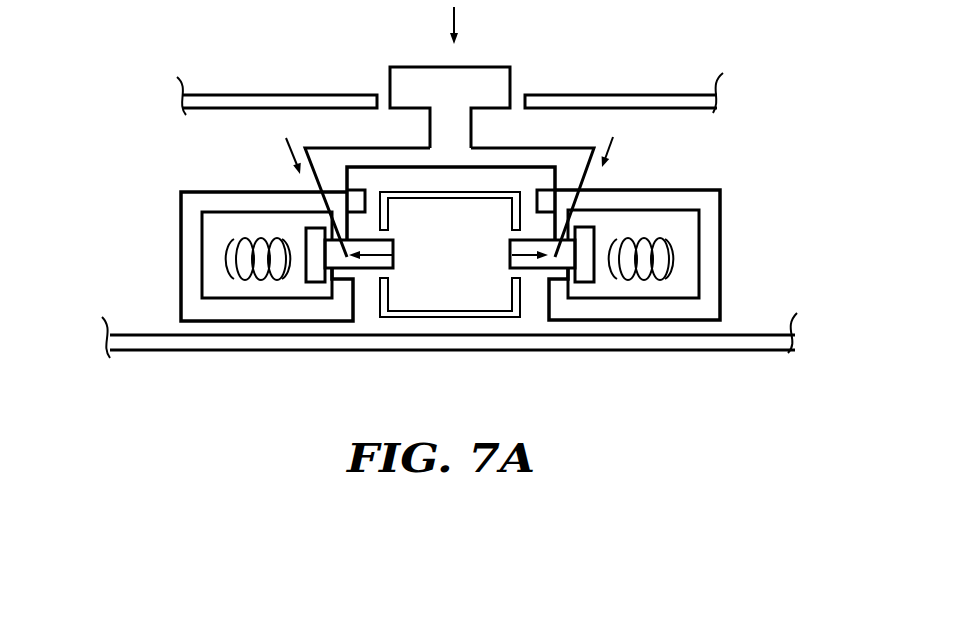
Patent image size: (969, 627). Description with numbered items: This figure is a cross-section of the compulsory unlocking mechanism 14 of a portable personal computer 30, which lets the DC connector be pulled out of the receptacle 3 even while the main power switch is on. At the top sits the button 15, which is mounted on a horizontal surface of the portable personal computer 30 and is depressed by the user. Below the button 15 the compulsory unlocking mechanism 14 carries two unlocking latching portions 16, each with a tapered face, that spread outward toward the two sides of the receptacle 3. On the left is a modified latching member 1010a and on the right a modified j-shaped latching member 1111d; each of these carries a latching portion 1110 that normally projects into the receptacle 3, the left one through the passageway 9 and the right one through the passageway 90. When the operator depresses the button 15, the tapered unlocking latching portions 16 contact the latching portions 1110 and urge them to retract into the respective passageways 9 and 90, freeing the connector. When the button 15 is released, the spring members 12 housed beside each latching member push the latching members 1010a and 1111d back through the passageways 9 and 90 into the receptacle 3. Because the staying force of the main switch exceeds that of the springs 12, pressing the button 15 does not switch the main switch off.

The portable personal computer 30 is at (291, 97).
The button 15 is at (490, 76).
The compulsory unlocking mechanism 14 is at (460, 147).
The unlocking latching portion 16 is at (331, 189).
The receptacle 3 is at (464, 254).
The passageway 90 is at (512, 271).
The passageway 9 is at (393, 268).
The latching portion 1110 is at (316, 266).
The modified latching member 1010a is at (200, 306).
The modified j-shaped latching member 1111d is at (713, 312).
The spring member 12 is at (221, 253).